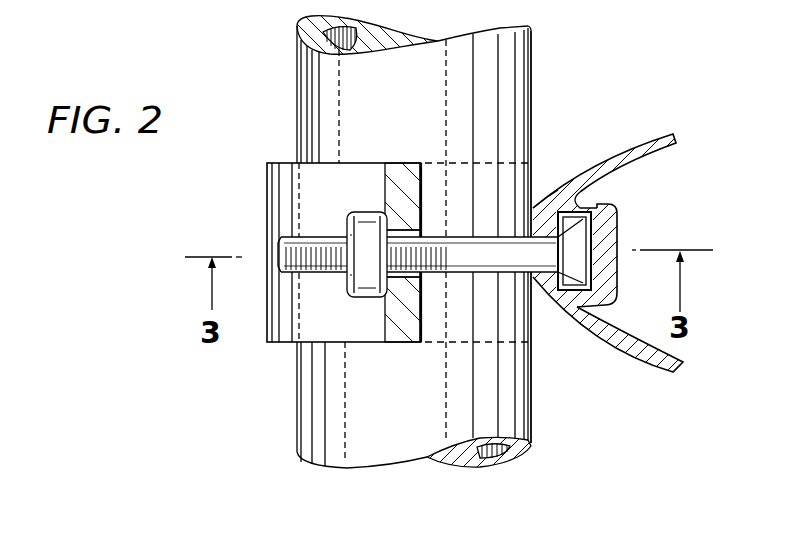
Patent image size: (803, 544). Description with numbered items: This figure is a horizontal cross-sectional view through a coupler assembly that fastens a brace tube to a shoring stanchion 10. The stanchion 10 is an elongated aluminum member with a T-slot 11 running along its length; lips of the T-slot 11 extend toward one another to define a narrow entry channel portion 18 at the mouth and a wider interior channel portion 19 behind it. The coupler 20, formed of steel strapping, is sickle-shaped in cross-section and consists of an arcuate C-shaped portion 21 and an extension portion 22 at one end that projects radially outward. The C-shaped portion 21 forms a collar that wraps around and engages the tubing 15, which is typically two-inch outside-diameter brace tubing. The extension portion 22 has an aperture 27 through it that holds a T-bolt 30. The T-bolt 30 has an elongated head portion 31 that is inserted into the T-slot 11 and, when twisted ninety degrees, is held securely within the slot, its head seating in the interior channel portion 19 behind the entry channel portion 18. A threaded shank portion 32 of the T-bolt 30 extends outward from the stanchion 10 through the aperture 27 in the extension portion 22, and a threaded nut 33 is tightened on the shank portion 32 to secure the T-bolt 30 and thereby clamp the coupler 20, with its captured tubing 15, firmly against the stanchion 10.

The shoring stanchion 10 is at (610, 241).
The T-slot 11 is at (611, 241).
The tubing 15 is at (297, 75).
The entry channel portion 18 is at (543, 214).
The interior channel portion 19 is at (592, 200).
The coupler 20 is at (325, 234).
The C-shaped portion 21 is at (278, 163).
The extension portion 22 is at (397, 163).
The aperture 27 is at (422, 229).
The T-bolt 30 is at (434, 270).
The elongated head portion 31 is at (595, 306).
The threaded shank portion 32 is at (478, 274).
The threaded nut 33 is at (368, 298).